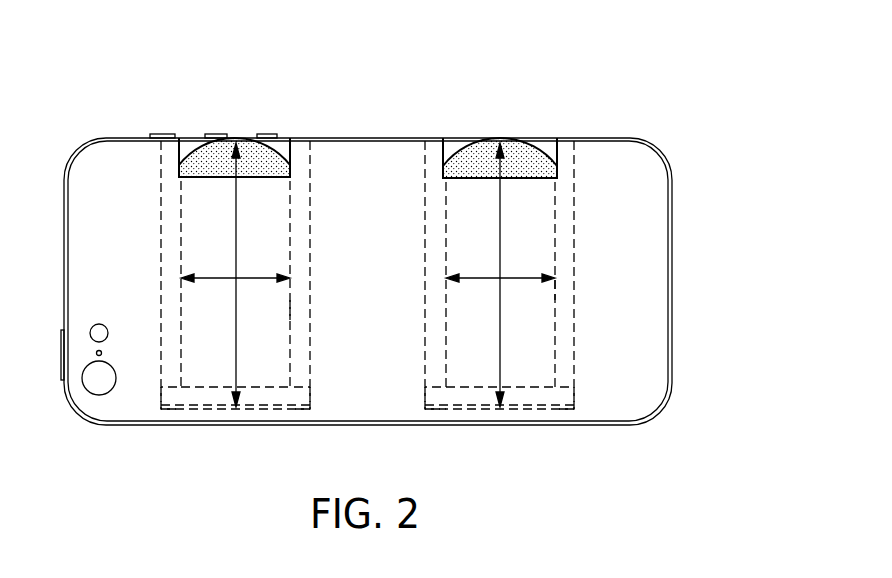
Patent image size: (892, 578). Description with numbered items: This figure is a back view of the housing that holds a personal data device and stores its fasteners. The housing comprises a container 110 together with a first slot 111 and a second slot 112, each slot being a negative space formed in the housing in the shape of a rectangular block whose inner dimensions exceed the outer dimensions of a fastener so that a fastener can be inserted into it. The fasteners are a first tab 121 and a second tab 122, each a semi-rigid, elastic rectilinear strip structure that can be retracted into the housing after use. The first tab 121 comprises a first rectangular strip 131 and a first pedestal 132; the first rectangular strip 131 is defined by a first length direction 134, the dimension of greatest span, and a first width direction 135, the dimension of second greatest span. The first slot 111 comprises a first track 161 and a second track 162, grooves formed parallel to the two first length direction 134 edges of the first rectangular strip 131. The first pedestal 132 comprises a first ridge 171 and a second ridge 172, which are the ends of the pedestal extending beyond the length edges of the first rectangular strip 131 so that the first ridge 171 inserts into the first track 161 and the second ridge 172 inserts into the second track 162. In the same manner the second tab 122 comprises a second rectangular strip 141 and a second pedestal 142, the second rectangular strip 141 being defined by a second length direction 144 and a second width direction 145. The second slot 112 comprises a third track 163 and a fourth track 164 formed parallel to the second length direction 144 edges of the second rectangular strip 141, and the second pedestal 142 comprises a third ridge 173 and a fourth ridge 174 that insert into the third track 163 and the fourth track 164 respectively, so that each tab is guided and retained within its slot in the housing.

The container 110 is at (620, 167).
The first slot 111 is at (567, 152).
The second slot 112 is at (294, 150).
The first tab 121 is at (540, 240).
The second tab 122 is at (268, 208).
The first rectangular strip 131 is at (537, 315).
The first pedestal 132 is at (525, 400).
The first length direction 134 is at (500, 223).
The first width direction 135 is at (480, 253).
The second rectangular strip 141 is at (217, 260).
The second pedestal 142 is at (213, 397).
The second length direction 144 is at (233, 205).
The second width direction 145 is at (217, 285).
The first track 161 is at (563, 285).
The second track 162 is at (433, 213).
The third track 163 is at (297, 305).
The fourth track 164 is at (172, 225).
The first ridge 171 is at (558, 402).
The second ridge 172 is at (435, 402).
The third ridge 173 is at (297, 400).
The fourth ridge 174 is at (168, 398).